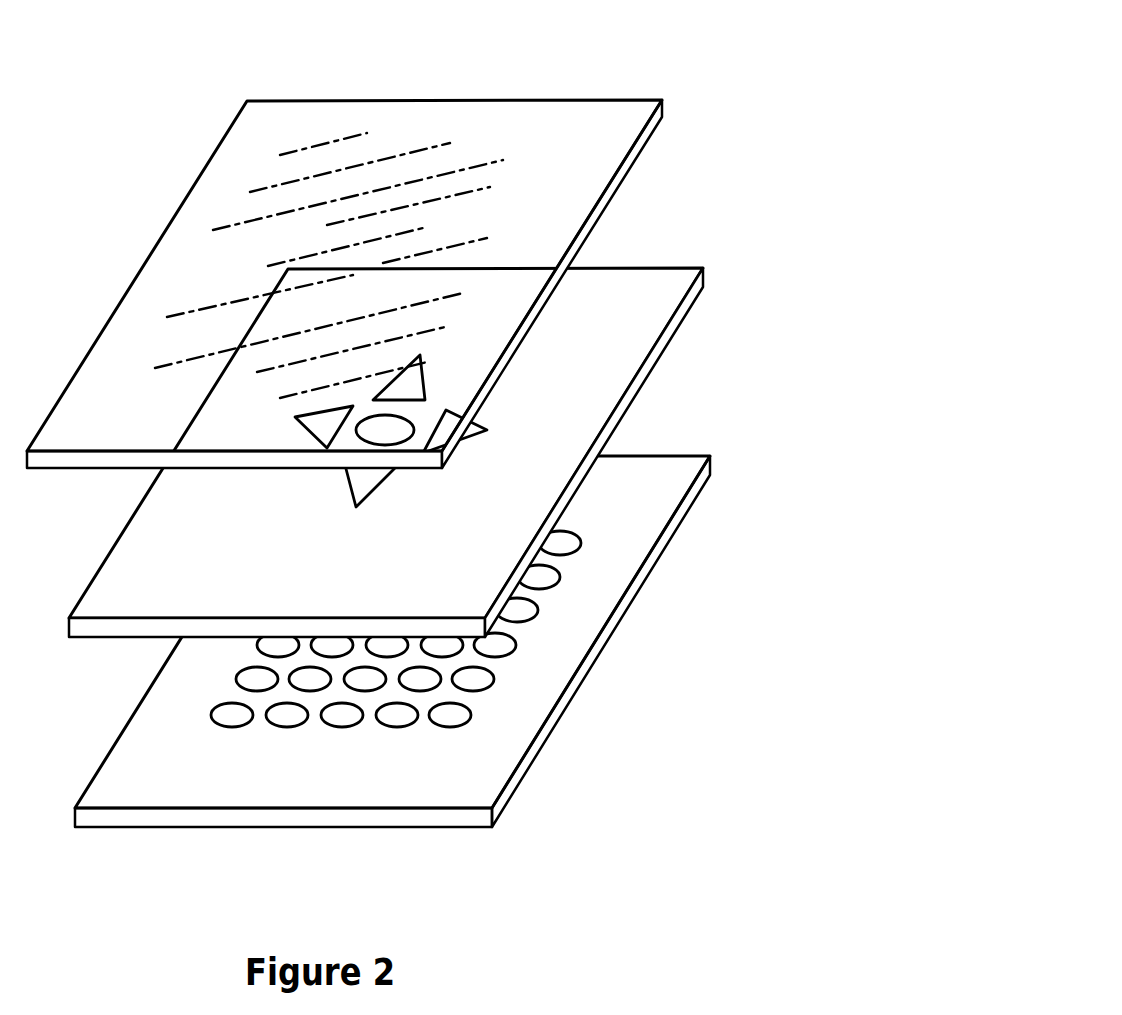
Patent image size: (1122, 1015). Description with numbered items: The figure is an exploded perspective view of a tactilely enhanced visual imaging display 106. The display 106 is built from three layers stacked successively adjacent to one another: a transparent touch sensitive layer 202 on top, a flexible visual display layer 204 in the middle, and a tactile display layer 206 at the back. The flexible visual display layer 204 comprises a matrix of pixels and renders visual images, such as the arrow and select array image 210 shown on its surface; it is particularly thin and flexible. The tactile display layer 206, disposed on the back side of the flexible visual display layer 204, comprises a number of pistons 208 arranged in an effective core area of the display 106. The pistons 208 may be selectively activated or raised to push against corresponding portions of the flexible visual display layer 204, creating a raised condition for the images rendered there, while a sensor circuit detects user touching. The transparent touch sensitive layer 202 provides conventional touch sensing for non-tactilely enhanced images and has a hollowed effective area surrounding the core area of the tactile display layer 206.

The tactilely enhanced visual imaging display 106 is at (925, 553).
The transparent touch sensitive layer 202 is at (653, 98).
The flexible visual display layer 204 is at (688, 262).
The tactile display layer 206 is at (703, 453).
The pistons 208 is at (555, 588).
The arrow and select array image 210 is at (367, 482).